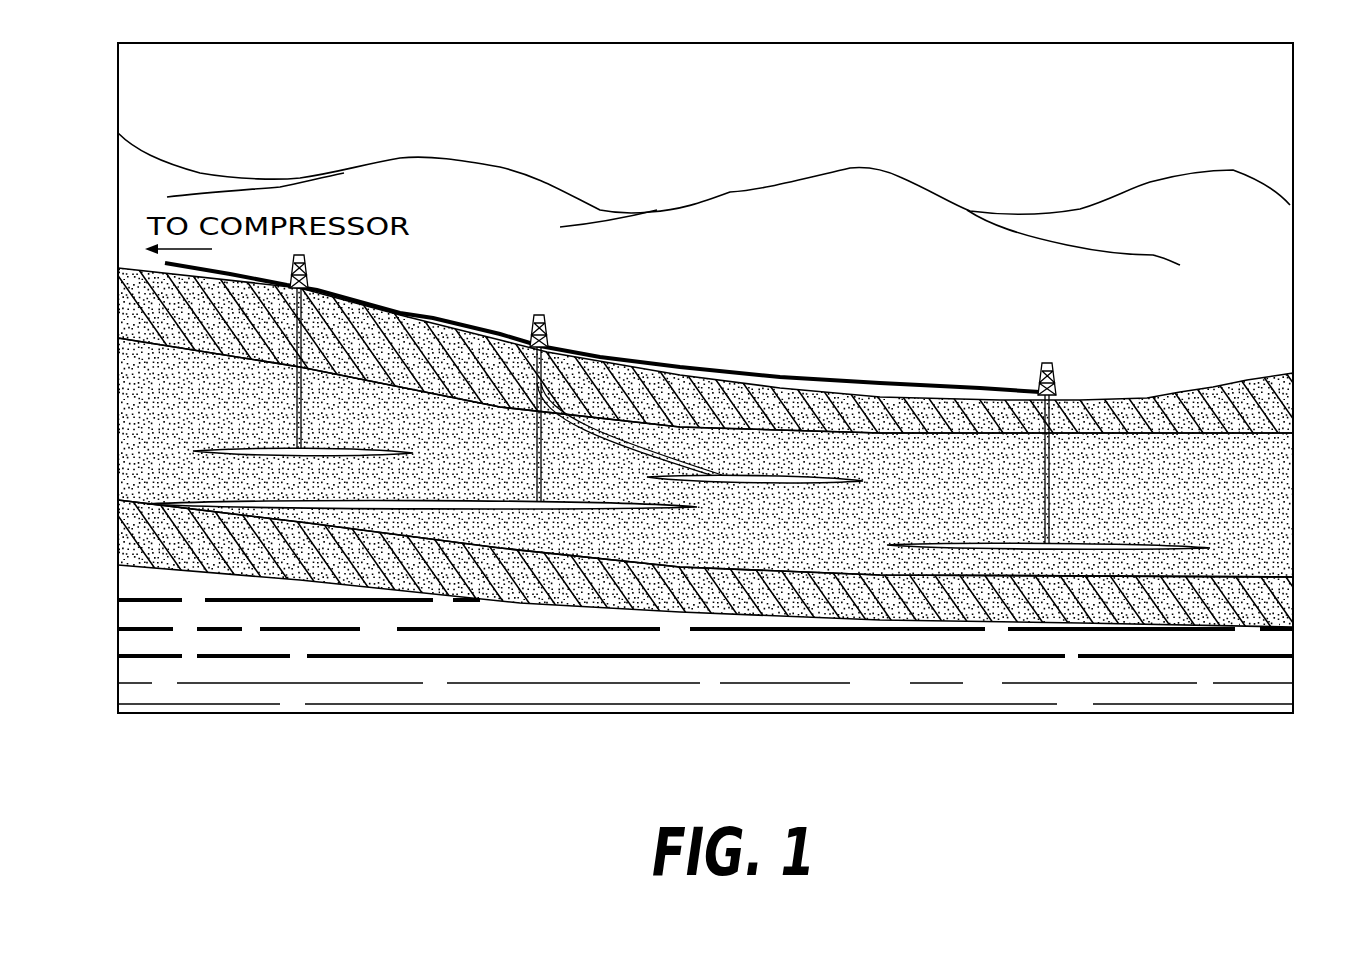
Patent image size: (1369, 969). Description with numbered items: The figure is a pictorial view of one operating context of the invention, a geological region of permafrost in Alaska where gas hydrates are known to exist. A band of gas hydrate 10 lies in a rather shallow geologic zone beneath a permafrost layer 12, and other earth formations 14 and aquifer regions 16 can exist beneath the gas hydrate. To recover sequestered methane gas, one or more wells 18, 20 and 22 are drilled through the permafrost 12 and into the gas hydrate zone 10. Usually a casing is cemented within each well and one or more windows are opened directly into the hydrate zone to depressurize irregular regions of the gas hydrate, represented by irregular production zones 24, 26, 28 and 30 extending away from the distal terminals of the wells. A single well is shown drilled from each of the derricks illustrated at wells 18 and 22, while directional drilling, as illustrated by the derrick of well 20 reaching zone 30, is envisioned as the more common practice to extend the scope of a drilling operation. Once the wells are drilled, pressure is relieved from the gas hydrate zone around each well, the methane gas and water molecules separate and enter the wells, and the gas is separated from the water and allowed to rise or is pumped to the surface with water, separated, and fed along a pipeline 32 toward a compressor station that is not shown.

The gas hydrate zone 10 is at (1122, 508).
The permafrost layer 12 is at (118, 296).
The earth formations 14 is at (1293, 590).
The aquifer regions 16 is at (118, 656).
The well 18 is at (1058, 382).
The well 20 is at (549, 338).
The well 22 is at (310, 272).
The production zone 24 is at (1167, 541).
The production zone 26 is at (422, 527).
The production zone 28 is at (230, 440).
The production zone 30 is at (845, 479).
The pipeline 32 is at (650, 355).